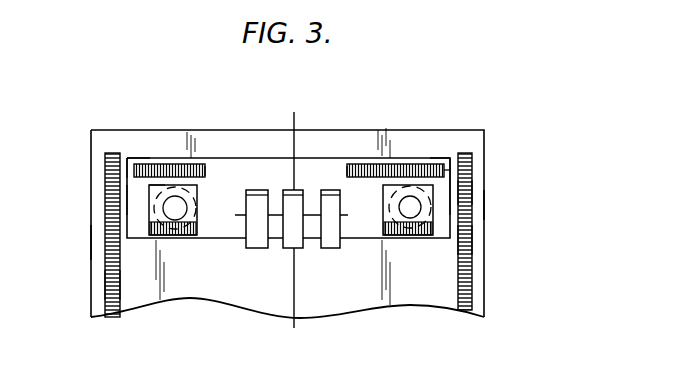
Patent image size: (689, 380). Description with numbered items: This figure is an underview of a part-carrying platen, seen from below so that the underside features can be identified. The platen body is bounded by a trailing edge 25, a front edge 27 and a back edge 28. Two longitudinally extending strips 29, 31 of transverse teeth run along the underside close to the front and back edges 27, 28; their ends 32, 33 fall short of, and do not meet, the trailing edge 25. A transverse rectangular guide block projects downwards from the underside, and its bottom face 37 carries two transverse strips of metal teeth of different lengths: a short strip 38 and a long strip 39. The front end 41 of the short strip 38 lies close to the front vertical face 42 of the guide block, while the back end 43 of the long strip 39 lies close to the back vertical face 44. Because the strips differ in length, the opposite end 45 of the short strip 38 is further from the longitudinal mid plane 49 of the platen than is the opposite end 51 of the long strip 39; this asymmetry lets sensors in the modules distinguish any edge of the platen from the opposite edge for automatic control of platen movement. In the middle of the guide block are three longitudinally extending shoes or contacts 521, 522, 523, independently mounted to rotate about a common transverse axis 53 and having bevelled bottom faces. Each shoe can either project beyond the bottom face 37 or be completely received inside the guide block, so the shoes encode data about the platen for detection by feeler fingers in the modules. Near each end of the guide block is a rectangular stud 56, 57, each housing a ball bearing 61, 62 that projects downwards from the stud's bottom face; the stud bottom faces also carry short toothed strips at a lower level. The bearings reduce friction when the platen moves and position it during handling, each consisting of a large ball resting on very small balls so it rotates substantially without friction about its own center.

The trailing edge 25 is at (305, 130).
The front edge 27 is at (91, 243).
The back edge 28 is at (486, 206).
The longitudinally extending strip of transverse teeth 29 is at (105, 283).
The longitudinally extending strip of transverse teeth 31 is at (472, 238).
The end of strip 32 is at (111, 152).
The end of strip 33 is at (465, 152).
The bottom face of guide block 37 is at (245, 168).
The short strip 38 is at (175, 166).
The long strip 39 is at (405, 166).
The front end of short strip 41 is at (127, 158).
The front vertical face of guide block 42 is at (127, 200).
The back end of long strip 43 is at (452, 173).
The back vertical face of guide block 44 is at (435, 188).
The opposite end of short strip 45 is at (206, 165).
The longitudinal mid plane 49 is at (294, 112).
The opposite end of long strip 51 is at (350, 165).
The shoe or contact 521 is at (250, 248).
The shoe or contact 522 is at (292, 248).
The shoe or contact 523 is at (327, 248).
The common transverse axis 53 is at (348, 216).
The rectangular stud 56 is at (150, 195).
The rectangular stud 57 is at (458, 192).
The ball bearing 61 is at (412, 210).
The ball bearing 62 is at (175, 212).